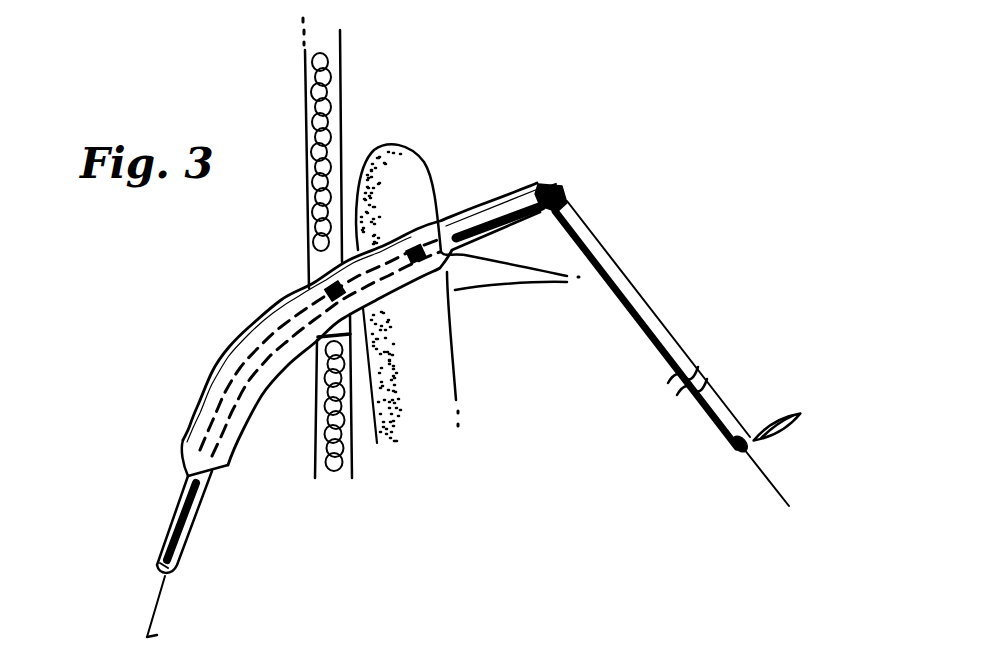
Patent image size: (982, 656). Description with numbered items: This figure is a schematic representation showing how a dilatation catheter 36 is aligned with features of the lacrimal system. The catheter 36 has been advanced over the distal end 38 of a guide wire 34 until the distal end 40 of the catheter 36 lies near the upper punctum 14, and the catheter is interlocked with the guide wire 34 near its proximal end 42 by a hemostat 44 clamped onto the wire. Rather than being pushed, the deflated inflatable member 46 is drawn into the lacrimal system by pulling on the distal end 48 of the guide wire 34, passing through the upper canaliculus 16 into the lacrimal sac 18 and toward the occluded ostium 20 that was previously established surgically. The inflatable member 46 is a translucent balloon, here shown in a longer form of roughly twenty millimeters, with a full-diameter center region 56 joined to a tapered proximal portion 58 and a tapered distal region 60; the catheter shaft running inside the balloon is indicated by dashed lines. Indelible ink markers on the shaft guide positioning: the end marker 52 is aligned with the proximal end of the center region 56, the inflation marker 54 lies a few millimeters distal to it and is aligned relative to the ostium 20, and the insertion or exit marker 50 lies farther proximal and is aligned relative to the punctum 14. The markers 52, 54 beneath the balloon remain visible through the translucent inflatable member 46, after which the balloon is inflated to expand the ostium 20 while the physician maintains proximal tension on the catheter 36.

The upper punctum 14 is at (548, 185).
The upper canaliculus 16 is at (495, 190).
The lacrimal sac 18 is at (400, 162).
The ostium 20 is at (318, 264).
The guide wire 34 is at (772, 478).
The catheter 36 is at (655, 299).
The distal end of the guide wire 38 is at (777, 498).
The distal end of the catheter 40 is at (158, 564).
The proximal end of the catheter 42 is at (730, 448).
The hemostat 44 is at (774, 420).
The inflatable member 46 is at (203, 398).
The distal end of the guide wire 48 is at (152, 633).
The insertion marker 50 is at (563, 192).
The end marker 52 is at (410, 247).
The inflation marker 54 is at (322, 287).
The center region 56 is at (258, 311).
The tapered proximal portion 58 is at (452, 283).
The tapered distal region 60 is at (221, 478).